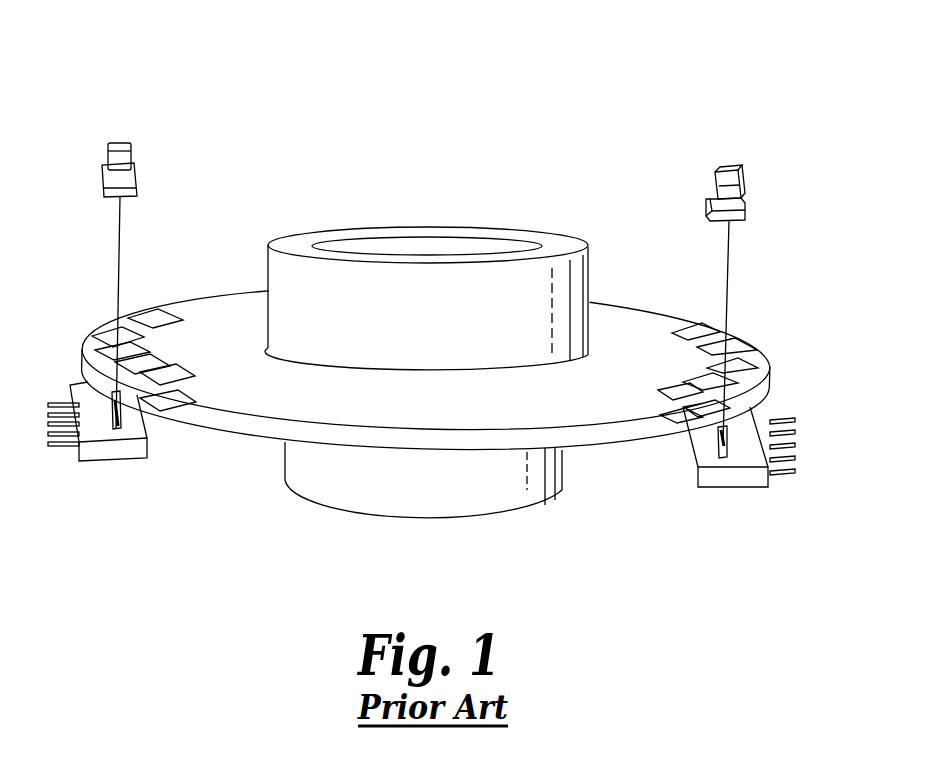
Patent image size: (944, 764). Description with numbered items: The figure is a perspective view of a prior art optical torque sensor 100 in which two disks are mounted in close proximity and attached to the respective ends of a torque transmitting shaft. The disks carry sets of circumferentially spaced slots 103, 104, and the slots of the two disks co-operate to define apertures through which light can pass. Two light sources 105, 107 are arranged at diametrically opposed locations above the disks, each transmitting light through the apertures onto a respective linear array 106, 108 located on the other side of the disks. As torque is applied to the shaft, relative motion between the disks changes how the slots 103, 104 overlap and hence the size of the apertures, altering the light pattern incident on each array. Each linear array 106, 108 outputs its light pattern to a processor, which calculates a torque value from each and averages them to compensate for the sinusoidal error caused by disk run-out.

The torque sensor 100 is at (318, 86).
The circumferentially spaced slots 103 is at (742, 345).
The circumferentially spaced slots 104 is at (748, 396).
The light source 105 is at (728, 188).
The linear array 106 is at (755, 488).
The light source 107 is at (126, 163).
The linear array 108 is at (118, 462).